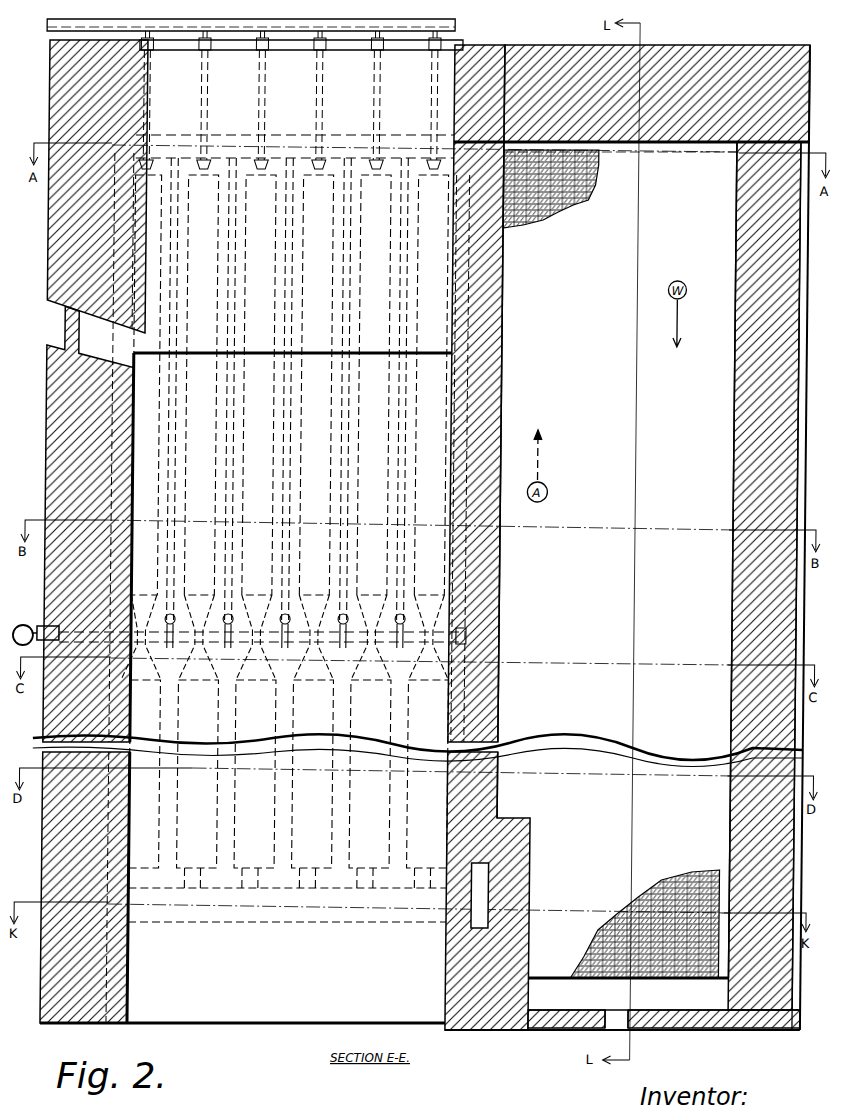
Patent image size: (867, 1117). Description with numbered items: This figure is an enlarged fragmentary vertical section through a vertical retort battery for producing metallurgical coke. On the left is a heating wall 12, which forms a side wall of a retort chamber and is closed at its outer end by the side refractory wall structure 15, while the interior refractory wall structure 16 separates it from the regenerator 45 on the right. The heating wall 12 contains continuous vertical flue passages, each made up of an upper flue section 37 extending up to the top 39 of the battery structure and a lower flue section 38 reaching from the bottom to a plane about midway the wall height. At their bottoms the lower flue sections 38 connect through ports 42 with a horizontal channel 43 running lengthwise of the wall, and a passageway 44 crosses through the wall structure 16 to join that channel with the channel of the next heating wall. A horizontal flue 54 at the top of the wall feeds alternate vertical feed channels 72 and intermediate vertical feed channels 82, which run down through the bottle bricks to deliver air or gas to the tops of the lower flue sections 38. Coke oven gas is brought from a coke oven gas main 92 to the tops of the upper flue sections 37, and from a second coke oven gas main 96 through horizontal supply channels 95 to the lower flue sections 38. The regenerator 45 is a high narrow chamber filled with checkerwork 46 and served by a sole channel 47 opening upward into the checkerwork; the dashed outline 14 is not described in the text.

The coke oven gas main 92 is at (455, 24).
The horizontal flue 54 is at (403, 143).
The top of the battery structure 39 is at (645, 107).
The checkerwork 46 is at (557, 207).
The regenerator 45 is at (700, 392).
The upper flue section 37 is at (373, 413).
The intermediate vertical feed channel 82 is at (343, 388).
The alternate vertical feed channel 72 is at (397, 482).
The retort chamber 14 is at (289, 688).
The horizontal supply channel 95 is at (48, 626).
The coke oven gas main 96 is at (48, 630).
The lower flue section 38 is at (368, 716).
The port 42 is at (288, 801).
The heating wall 12 is at (195, 798).
The side refractory wall structure 15 is at (112, 958).
The horizontal channel 43 is at (345, 915).
The passageway 44 is at (493, 902).
The interior refractory wall structure 16 is at (543, 890).
The sole channel 47 is at (664, 1003).